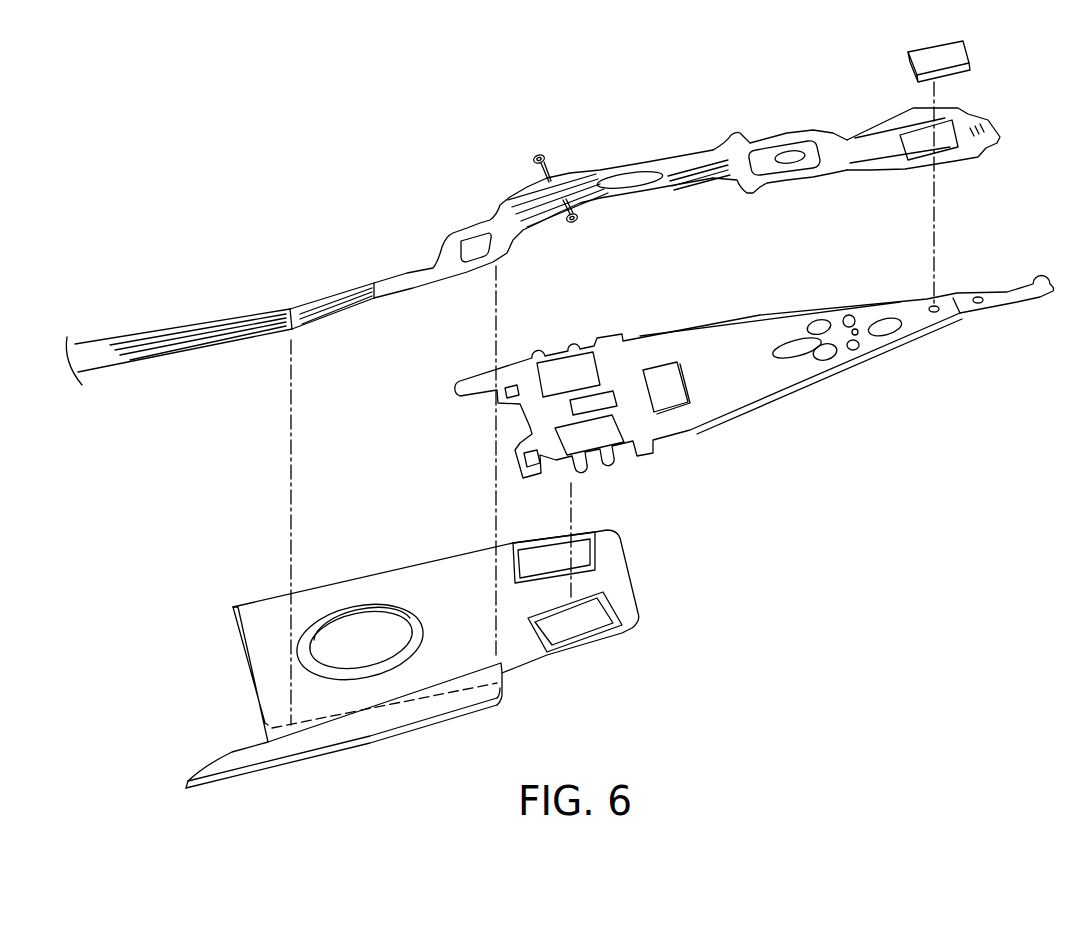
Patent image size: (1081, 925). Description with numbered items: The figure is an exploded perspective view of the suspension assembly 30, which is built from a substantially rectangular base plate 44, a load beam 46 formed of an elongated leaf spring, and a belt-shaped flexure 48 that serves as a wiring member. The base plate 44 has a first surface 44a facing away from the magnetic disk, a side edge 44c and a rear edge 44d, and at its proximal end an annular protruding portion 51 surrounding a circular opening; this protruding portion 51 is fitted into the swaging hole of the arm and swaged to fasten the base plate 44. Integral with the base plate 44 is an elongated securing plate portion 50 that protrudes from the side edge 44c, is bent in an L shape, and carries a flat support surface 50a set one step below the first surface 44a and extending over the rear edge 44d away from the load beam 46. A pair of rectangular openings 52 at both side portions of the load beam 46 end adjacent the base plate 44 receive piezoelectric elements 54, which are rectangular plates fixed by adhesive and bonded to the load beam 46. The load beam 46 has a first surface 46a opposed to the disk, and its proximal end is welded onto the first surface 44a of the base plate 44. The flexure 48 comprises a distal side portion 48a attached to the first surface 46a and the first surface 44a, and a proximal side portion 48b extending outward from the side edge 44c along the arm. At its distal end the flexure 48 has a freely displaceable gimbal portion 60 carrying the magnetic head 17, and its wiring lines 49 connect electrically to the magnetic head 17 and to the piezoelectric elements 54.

The magnetic head 17 is at (973, 56).
The suspension assembly 30 is at (789, 572).
The base plate 44 is at (427, 627).
The first surface 44a is at (436, 577).
The side edge 44c is at (478, 700).
The rear edge 44d is at (240, 658).
The load beam 46 is at (754, 377).
The first surface 46a is at (722, 340).
The flexure 48 is at (533, 225).
The distal side portion 48a is at (741, 129).
The proximal side portion 48b is at (147, 326).
The wiring lines 49 is at (222, 333).
The securing plate portion 50 is at (341, 747).
The support surface 50a is at (391, 730).
The protruding portion 51 is at (345, 640).
The rectangular openings 52 is at (598, 565).
The piezoelectric elements 54 is at (548, 556).
The gimbal portion 60 is at (918, 138).